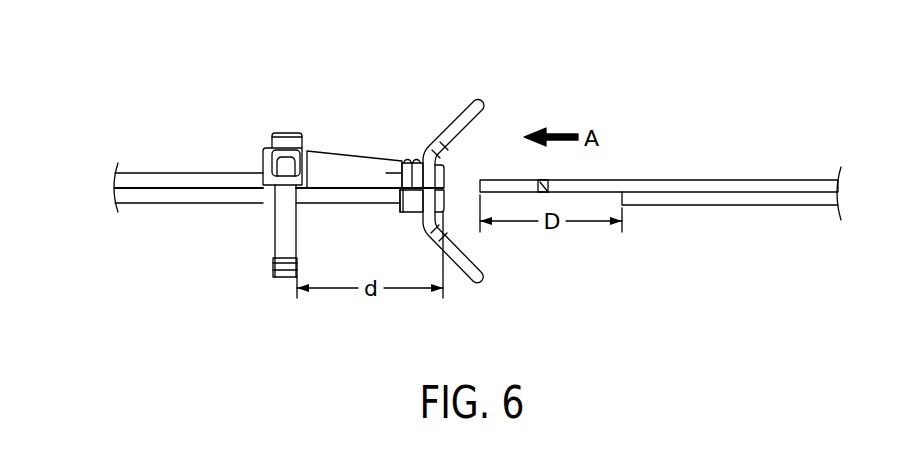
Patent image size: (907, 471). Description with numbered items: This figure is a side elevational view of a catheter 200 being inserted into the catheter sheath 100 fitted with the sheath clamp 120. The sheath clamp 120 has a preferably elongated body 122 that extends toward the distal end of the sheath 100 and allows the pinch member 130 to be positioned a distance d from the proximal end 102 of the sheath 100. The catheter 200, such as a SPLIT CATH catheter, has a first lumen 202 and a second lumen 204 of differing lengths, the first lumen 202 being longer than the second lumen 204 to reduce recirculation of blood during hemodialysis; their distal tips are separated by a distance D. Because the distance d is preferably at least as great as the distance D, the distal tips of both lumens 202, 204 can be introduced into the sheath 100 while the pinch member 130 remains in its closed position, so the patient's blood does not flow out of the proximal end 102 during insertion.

The catheter sheath 100 is at (150, 248).
The proximal end 102 is at (452, 212).
The sheath clamp 120 is at (340, 150).
The elongated body 122 is at (377, 152).
The pinch member 130 is at (273, 243).
The catheter 200 is at (670, 166).
The first lumen 202 is at (655, 178).
The second lumen 204 is at (735, 205).